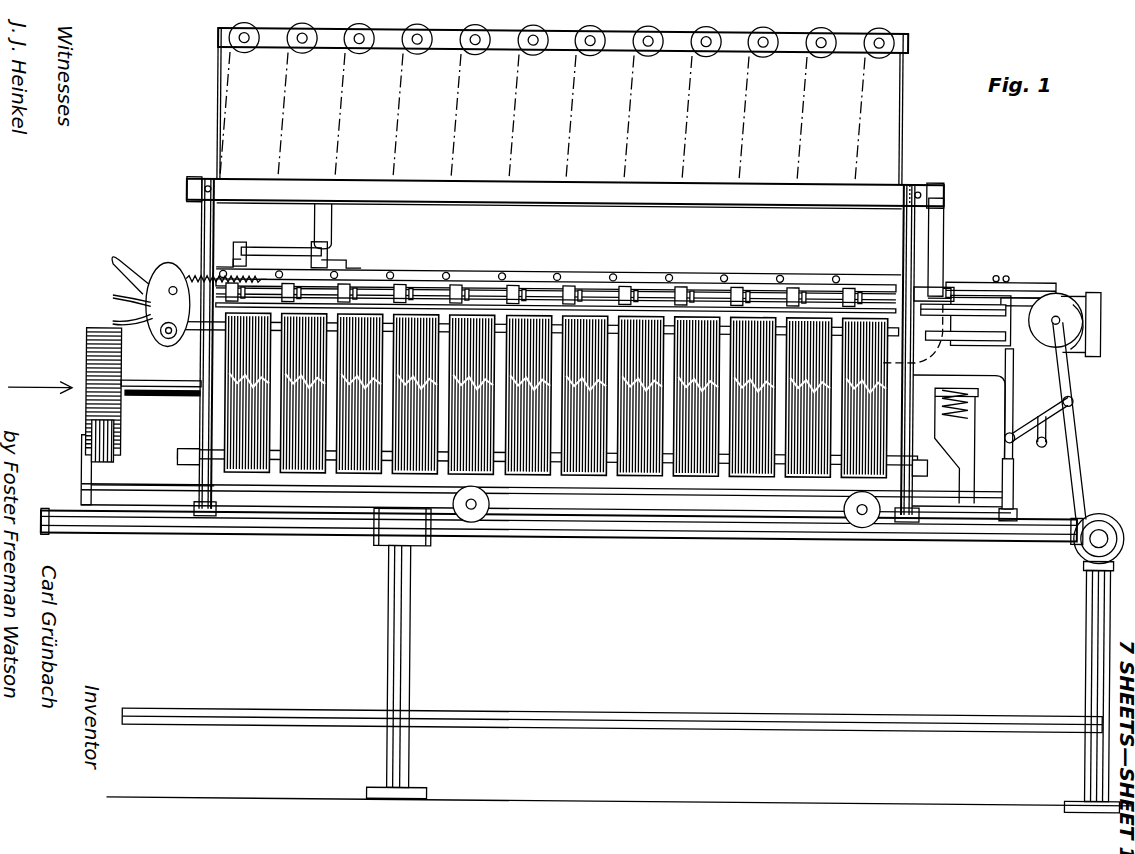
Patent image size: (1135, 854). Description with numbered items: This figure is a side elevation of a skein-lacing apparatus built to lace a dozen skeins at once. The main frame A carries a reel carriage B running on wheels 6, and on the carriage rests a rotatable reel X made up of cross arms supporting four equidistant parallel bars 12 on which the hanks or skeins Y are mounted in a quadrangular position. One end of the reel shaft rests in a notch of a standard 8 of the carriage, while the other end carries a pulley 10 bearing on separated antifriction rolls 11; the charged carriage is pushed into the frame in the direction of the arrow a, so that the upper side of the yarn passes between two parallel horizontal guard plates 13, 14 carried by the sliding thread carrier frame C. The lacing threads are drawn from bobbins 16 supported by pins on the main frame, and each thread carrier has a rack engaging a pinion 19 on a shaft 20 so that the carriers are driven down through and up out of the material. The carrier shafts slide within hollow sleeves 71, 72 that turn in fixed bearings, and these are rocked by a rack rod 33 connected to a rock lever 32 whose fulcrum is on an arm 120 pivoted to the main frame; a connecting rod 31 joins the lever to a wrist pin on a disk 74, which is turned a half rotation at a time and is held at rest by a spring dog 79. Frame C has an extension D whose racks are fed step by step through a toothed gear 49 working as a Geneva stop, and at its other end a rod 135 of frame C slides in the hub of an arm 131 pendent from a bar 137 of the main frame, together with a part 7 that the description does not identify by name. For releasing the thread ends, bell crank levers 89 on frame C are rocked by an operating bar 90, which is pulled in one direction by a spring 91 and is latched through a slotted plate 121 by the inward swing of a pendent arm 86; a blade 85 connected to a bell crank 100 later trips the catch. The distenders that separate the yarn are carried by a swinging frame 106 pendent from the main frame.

The wheels 6 is at (477, 518).
The shaft 7 is at (143, 387).
The standard 8 is at (970, 480).
The pulley 10 is at (86, 360).
The antifriction rolls 11 is at (113, 460).
The parallel bars or rods 12 is at (566, 478).
The guard plate 13 is at (112, 325).
The guard plate 14 is at (112, 300).
The bobbins 16 is at (530, 52).
The pinion 19 is at (513, 290).
The shaft 20 is at (405, 290).
The connecting rod 31 is at (1076, 394).
The rock lever 32 is at (1062, 404).
The rack rod 33 is at (1006, 400).
The toothed gear 49 is at (996, 272).
The hollow shaft or sleeve 71 is at (956, 311).
The hollow shaft or sleeve 72 is at (985, 339).
The disk 74 is at (1060, 289).
The spring dog 79 is at (1071, 346).
The blade 85 is at (958, 279).
The pendent arm 86 is at (942, 225).
The bell crank levers 89 is at (662, 290).
The operating bar 90 is at (572, 291).
The spring 91 is at (186, 278).
The bell crank 100 is at (1030, 284).
The swinging frame 106 is at (893, 236).
The arm 120 is at (1048, 436).
The plate 121 is at (746, 282).
The arm 131 is at (332, 224).
The rod 135 is at (288, 239).
The bar 137 is at (565, 192).
The frame A is at (198, 538).
The reel carriage B is at (652, 532).
The thread carrier frame C is at (556, 269).
The extension D is at (1080, 309).
The rotatable reel X is at (162, 409).
The hank or skein Y is at (352, 478).
The arrow a is at (40, 396).